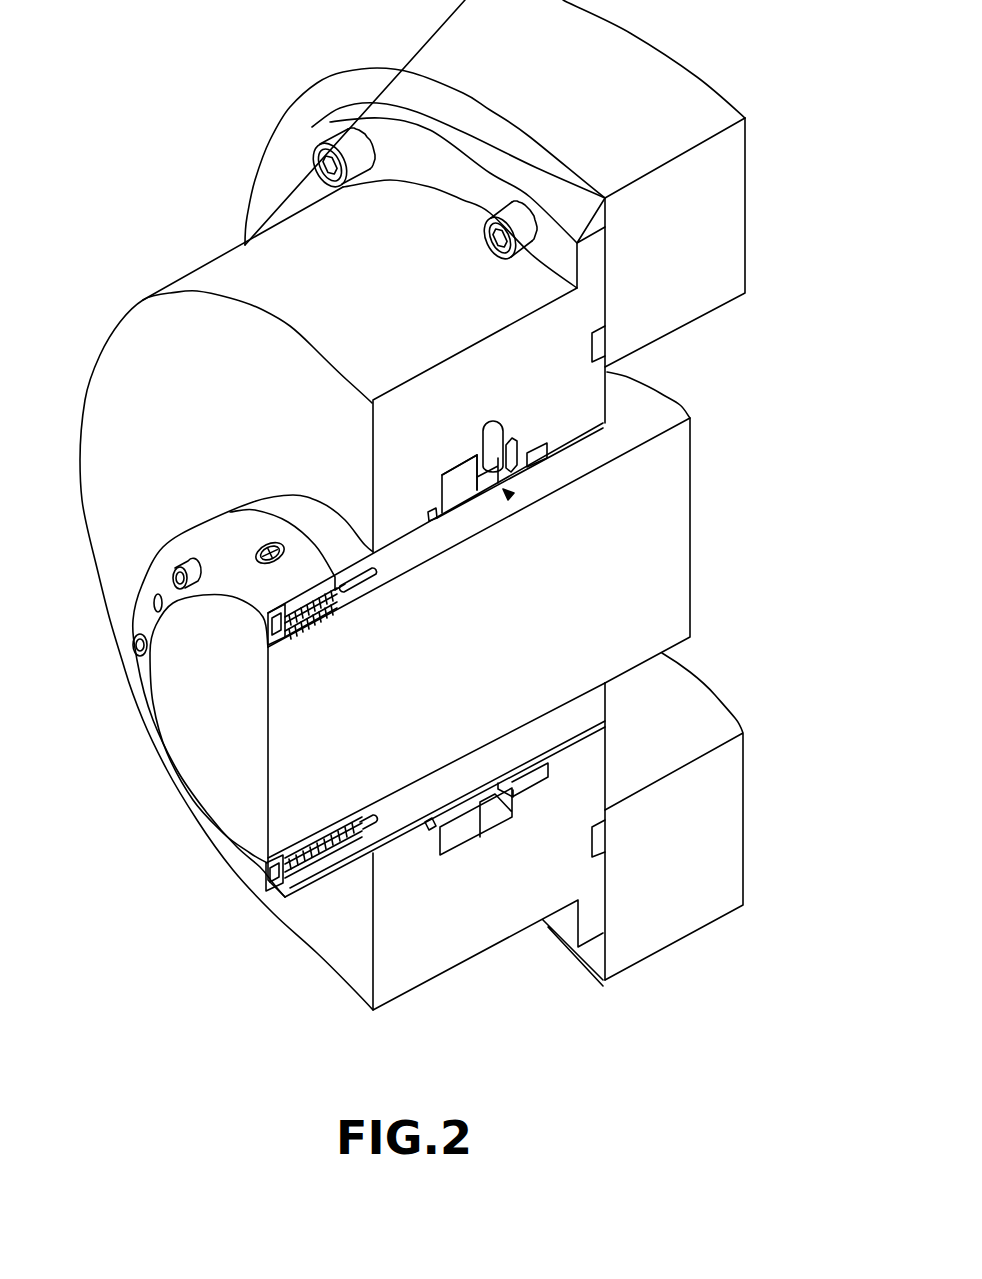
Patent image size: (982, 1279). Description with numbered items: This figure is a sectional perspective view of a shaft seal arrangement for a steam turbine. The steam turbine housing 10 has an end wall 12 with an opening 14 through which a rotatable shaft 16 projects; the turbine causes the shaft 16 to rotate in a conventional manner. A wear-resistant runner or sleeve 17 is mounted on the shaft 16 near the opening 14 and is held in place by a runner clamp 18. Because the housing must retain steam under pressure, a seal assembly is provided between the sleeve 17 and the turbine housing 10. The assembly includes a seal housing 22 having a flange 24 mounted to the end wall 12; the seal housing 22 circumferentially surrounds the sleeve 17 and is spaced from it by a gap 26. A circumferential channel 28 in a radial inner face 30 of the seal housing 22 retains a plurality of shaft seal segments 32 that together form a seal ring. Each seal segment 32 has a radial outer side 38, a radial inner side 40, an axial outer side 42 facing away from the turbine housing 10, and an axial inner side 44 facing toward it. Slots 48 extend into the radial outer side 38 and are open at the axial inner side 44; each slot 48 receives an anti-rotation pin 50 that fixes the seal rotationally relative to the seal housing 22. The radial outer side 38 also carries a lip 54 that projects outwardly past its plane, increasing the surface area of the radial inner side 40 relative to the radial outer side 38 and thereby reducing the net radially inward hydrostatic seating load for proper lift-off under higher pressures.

The steam turbine housing 10 is at (705, 115).
The end wall 12 is at (560, 170).
The opening 14 is at (722, 305).
The rotatable shaft 16 is at (668, 540).
The sleeve 17 is at (580, 460).
The runner clamp 18 is at (157, 580).
The seal housing 22 is at (167, 330).
The flange 24 is at (428, 160).
The gap 26 is at (499, 487).
The circumferential channel 28 is at (448, 474).
The radial inner face 30 is at (393, 534).
The shaft seal segment 32 is at (458, 489).
The radial outer side 38 is at (442, 473).
The radial inner side 40 is at (505, 493).
The axial outer side 42 is at (442, 476).
The axial inner side 44 is at (527, 461).
The slot 48 is at (481, 463).
The anti-rotation pin 50 is at (498, 434).
The lip 54 is at (430, 516).